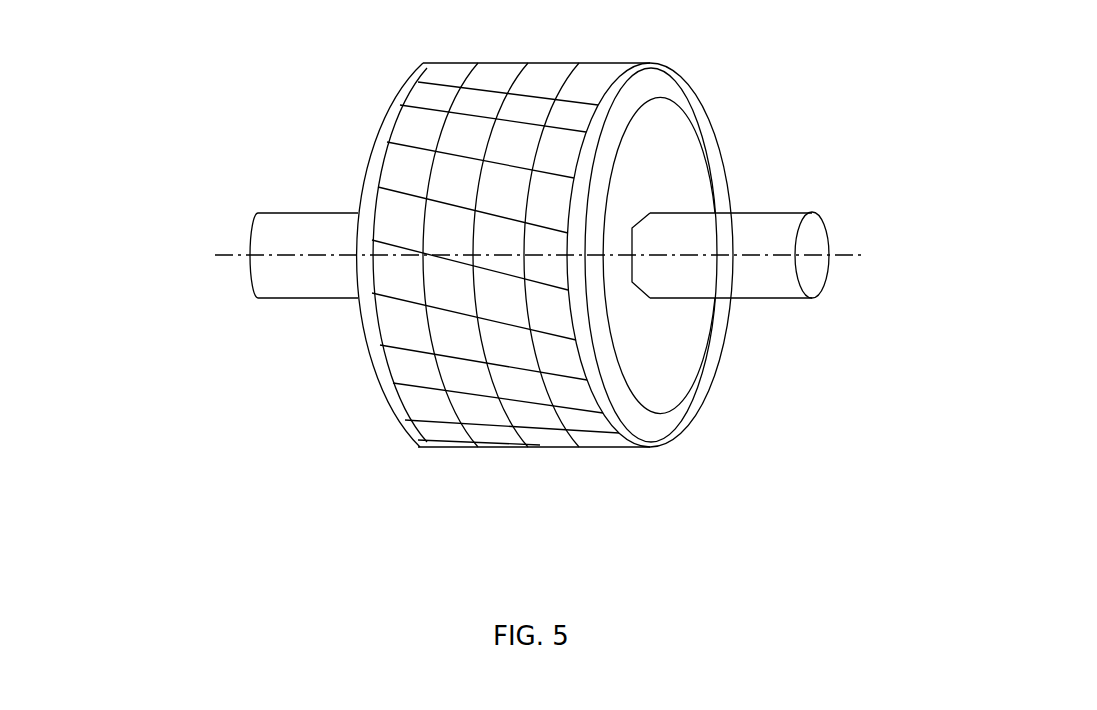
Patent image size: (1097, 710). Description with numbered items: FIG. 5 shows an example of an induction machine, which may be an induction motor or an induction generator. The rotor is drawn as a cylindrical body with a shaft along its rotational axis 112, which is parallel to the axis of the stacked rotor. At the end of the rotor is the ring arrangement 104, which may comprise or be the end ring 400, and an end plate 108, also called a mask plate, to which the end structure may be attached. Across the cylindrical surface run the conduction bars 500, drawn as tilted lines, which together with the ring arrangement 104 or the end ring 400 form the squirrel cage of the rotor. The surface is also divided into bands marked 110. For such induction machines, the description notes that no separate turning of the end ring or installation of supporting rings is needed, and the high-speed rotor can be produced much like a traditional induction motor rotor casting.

The ring arrangement 104 is at (565, 255).
The end ring 400 is at (565, 255).
The conduction bars 500 is at (494, 88).
The rotor segment 110 is at (425, 186).
The end plate 108 is at (313, 245).
The rotational axis 112 is at (224, 254).